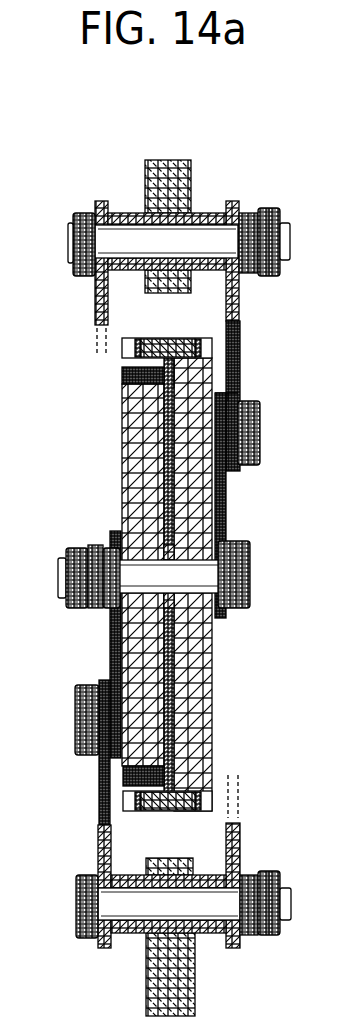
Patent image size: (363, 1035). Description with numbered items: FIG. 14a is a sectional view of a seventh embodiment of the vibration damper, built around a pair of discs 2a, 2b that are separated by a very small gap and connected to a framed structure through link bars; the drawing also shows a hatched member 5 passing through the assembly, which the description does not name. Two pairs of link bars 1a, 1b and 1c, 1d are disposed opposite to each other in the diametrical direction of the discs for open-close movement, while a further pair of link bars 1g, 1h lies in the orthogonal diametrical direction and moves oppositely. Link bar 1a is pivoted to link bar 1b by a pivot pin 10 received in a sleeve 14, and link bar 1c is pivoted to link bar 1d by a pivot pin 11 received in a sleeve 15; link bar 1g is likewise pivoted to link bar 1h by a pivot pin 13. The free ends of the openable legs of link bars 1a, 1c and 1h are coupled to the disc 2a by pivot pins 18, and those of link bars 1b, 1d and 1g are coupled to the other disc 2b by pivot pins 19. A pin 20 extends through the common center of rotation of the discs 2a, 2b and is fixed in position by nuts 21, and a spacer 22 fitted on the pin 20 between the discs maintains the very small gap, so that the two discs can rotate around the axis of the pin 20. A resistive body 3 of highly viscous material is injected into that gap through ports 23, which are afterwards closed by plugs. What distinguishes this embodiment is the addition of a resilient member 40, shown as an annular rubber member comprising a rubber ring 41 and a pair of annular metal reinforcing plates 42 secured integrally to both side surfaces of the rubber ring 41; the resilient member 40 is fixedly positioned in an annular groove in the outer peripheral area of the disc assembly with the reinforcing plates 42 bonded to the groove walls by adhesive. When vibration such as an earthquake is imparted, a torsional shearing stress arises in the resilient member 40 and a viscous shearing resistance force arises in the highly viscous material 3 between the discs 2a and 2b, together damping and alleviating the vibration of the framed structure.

The link bar 1a is at (87, 296).
The link bar 1b is at (232, 289).
The link bar 1c is at (90, 834).
The link bar 1d is at (232, 828).
The link bar 1g is at (222, 494).
The link bar 1h is at (102, 641).
The disc 2a is at (114, 433).
The disc 2b is at (204, 681).
The resistive body 3 is at (158, 472).
The shaft 5 is at (158, 152).
The pivot pin 10 is at (196, 232).
The pivot pin 11 is at (283, 893).
The pivot pin 13 is at (62, 568).
The sleeve 14 is at (115, 205).
The sleeve 15 is at (128, 895).
The pivot pin 18 is at (67, 712).
The pivot pin 19 is at (252, 414).
The pin 20 is at (205, 560).
The nut 21 is at (246, 586).
The spacer 22 is at (166, 598).
The port 23 is at (114, 366).
The resilient member 40 is at (158, 327).
The rubber ring 41 is at (168, 355).
The reinforcing plate 42 is at (125, 330).